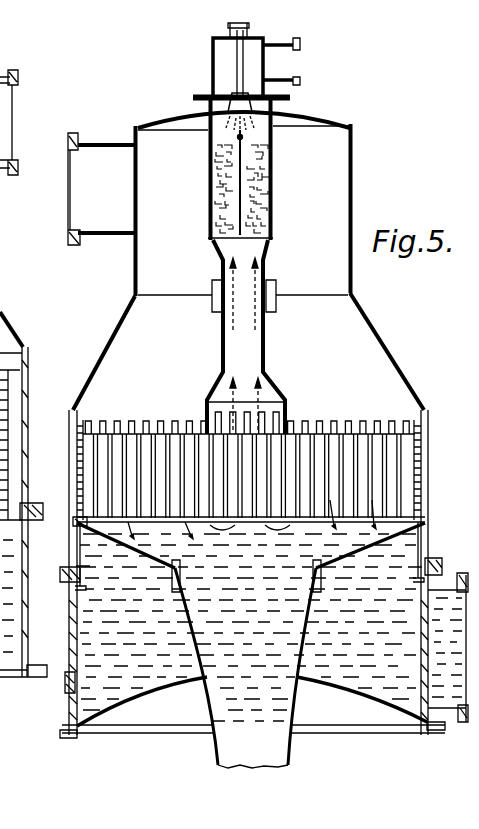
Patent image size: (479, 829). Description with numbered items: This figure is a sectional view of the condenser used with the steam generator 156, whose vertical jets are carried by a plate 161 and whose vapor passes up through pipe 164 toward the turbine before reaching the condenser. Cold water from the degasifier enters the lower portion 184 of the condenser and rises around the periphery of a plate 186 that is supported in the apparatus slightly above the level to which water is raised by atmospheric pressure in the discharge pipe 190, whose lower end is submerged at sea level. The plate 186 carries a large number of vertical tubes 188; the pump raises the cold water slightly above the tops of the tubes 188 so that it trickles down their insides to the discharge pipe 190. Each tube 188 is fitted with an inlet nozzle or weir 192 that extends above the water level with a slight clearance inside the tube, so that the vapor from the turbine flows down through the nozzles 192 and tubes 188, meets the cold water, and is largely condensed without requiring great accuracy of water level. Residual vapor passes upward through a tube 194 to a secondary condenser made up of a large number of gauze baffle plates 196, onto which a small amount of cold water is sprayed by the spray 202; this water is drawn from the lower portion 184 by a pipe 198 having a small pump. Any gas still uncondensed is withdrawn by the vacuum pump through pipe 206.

The steam generator 156 is at (0, 298).
The plate 161 is at (372, 522).
The pipe 164 is at (0, 110).
The lower portion of the condenser 184 is at (392, 600).
The plate 186 is at (398, 553).
The vertical tubes 188 is at (405, 435).
The discharge pipe 190 is at (290, 755).
The inlet nozzle or weir 192 is at (153, 421).
The tube 194 is at (265, 342).
The gauze baffle plates 196 is at (277, 190).
The pipe 198 is at (67, 684).
The spray 202 is at (243, 104).
The pipe 206 is at (287, 62).